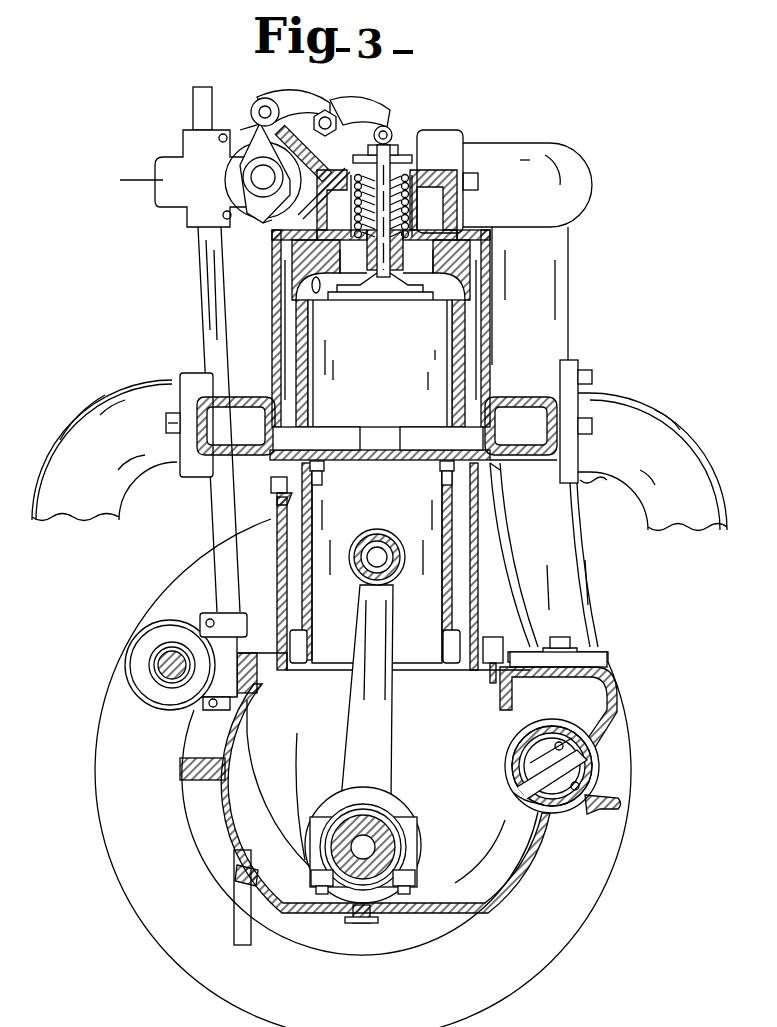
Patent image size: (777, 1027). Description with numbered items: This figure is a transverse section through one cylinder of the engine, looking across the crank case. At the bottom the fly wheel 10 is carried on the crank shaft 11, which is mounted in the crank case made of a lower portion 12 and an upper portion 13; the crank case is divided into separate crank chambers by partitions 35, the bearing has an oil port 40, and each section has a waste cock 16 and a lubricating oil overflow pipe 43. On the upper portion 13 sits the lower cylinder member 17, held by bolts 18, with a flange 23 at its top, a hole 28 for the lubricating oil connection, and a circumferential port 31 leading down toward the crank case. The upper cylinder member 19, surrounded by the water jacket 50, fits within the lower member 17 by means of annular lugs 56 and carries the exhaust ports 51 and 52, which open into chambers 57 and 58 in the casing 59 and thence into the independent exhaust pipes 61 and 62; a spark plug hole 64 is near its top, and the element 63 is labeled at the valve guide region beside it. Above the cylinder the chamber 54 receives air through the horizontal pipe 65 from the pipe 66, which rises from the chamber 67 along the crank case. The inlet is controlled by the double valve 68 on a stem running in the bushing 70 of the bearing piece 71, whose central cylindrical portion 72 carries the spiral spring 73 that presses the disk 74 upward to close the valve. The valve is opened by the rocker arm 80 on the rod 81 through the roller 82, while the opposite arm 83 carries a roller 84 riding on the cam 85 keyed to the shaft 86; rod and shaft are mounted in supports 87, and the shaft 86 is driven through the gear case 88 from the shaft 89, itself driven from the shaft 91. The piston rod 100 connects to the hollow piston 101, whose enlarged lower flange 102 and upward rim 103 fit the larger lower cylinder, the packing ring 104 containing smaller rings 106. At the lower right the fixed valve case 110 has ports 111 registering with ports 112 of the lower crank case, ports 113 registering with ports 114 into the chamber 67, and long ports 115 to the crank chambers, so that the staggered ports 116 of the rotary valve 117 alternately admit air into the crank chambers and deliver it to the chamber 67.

The fly wheel 10 is at (363, 773).
The crank shaft 11 is at (356, 830).
The lower portion of crank case 12 is at (462, 878).
The upper portion of crank case 13 is at (505, 715).
The waste cock 16 is at (360, 923).
The lower cylinder member 17 is at (479, 580).
The bolt 18 is at (494, 645).
The upper cylinder member 19 is at (462, 351).
The flange 23 is at (495, 463).
The hole 28 is at (270, 485).
The port 31 is at (279, 499).
The partition 35 is at (245, 783).
The port 40 is at (140, 641).
The lubricating oil overflow pipe 43 is at (235, 888).
The water jacket 50 is at (272, 259).
The exhaust port 51 is at (418, 440).
The exhaust port 52 is at (335, 440).
The chamber 54 is at (441, 130).
The annular lug 56 is at (500, 476).
The exhaust chamber 57 is at (521, 426).
The exhaust chamber 58 is at (236, 426).
The casing 59 is at (238, 395).
The exhaust pipe 61 is at (660, 423).
The exhaust pipe 62 is at (100, 410).
The valve port 63 is at (413, 270).
The spark plug hole 64 is at (378, 277).
The horizontal pipe 65 is at (496, 148).
The pipe 66 is at (566, 282).
The chamber 67 is at (592, 691).
The double valve 68 is at (397, 301).
The bushing 70 is at (351, 214).
The bearing piece 71 is at (337, 198).
The central cylindrical portion 72 is at (365, 246).
The spiral spring 73 is at (414, 163).
The disk 74 is at (398, 150).
The rocker arm 80 is at (360, 97).
The rod 81 is at (327, 115).
The roller 82 is at (392, 124).
The arm 83 is at (300, 88).
The roller 84 is at (303, 153).
The cam 85 is at (258, 125).
The shaft 86 is at (260, 177).
The support 87 is at (308, 200).
The gear case 88 is at (160, 183).
The shaft 89 is at (198, 262).
The shaft 91 is at (170, 682).
The piston rod 100 is at (386, 627).
The piston 101 is at (377, 563).
The flange 102 is at (296, 662).
The rim 103 is at (302, 640).
The packing ring 104 is at (446, 502).
The packing ring 106 is at (325, 491).
The valve case 110 is at (600, 768).
The port 111 is at (592, 781).
The port 112 is at (620, 799).
The port 113 is at (571, 744).
The port 114 is at (553, 720).
The port 115 is at (509, 795).
The port 116 is at (552, 766).
The rotary valve 117 is at (594, 754).